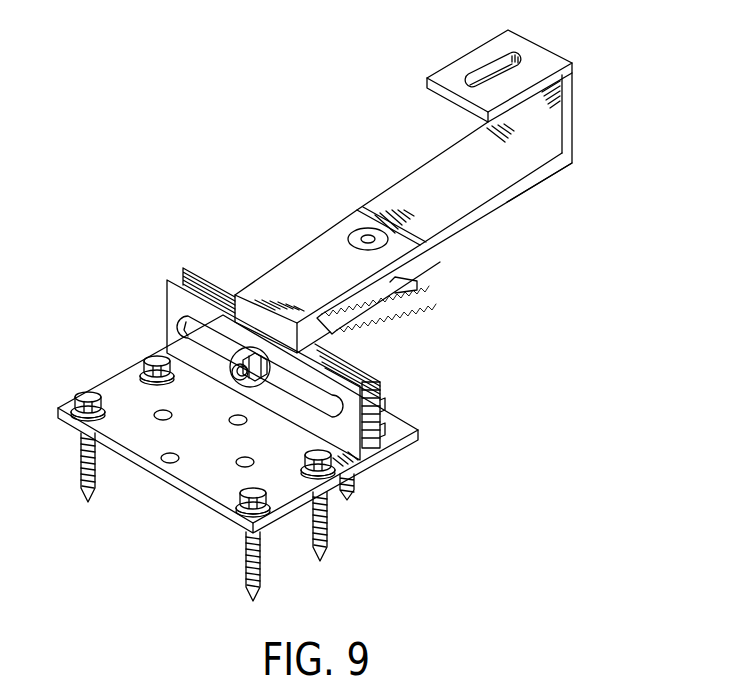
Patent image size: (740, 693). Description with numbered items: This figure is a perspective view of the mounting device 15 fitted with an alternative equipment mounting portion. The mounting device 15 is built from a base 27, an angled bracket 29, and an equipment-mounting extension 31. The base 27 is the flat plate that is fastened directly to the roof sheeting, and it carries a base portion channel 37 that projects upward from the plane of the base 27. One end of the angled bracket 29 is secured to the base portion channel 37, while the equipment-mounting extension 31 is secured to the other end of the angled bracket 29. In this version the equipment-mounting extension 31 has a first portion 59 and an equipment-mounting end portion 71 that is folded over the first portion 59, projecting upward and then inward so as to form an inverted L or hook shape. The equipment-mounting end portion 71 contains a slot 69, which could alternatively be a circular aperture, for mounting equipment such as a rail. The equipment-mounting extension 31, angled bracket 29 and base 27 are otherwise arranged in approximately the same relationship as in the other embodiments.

The mounting device 15 is at (365, 152).
The base 27 is at (121, 372).
The angled bracket 29 is at (308, 242).
The equipment-mounting extension 31 is at (470, 232).
The base portion channel 37 is at (167, 311).
The first portion 59 is at (385, 193).
The slot 69 is at (510, 53).
The equipment-mounting end portion 71 is at (553, 50).